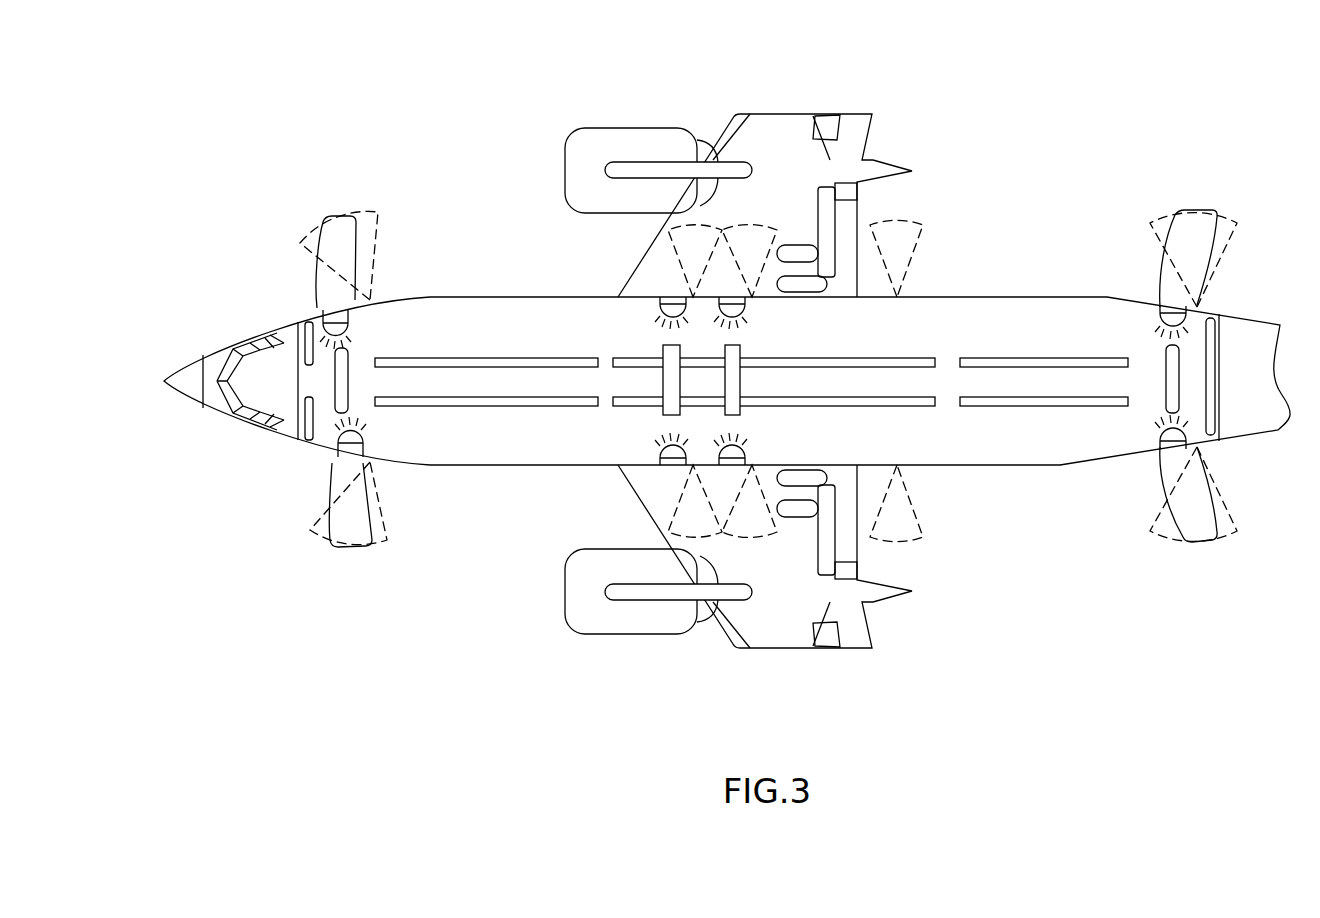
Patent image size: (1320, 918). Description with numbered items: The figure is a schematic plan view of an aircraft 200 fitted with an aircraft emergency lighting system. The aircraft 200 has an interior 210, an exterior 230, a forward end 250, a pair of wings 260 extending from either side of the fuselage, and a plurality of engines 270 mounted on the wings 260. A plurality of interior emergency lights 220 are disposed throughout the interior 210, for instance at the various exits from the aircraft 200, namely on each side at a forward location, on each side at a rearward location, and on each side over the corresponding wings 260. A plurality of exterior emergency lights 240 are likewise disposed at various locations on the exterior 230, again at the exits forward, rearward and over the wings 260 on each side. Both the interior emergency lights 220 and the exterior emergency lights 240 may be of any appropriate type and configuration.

The aircraft 200 is at (1090, 145).
The interior 210 is at (527, 446).
The interior emergency lights 220 is at (360, 322).
The exterior 230 is at (457, 166).
The exterior emergency lights 240 is at (370, 297).
The forward end 250 is at (176, 378).
The wings 260 is at (772, 153).
The engines 270 is at (613, 128).